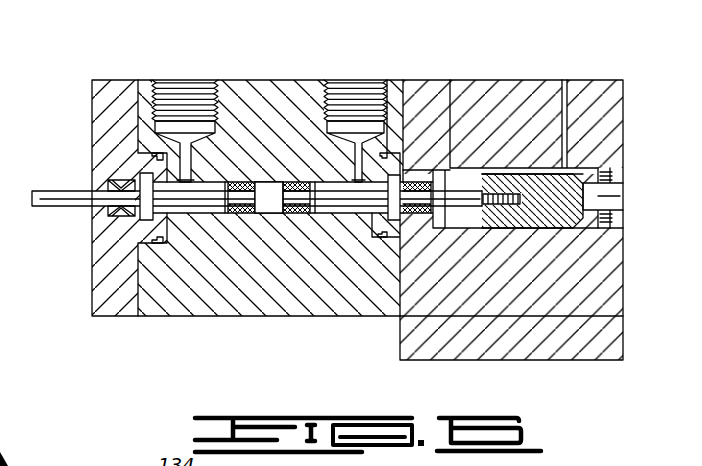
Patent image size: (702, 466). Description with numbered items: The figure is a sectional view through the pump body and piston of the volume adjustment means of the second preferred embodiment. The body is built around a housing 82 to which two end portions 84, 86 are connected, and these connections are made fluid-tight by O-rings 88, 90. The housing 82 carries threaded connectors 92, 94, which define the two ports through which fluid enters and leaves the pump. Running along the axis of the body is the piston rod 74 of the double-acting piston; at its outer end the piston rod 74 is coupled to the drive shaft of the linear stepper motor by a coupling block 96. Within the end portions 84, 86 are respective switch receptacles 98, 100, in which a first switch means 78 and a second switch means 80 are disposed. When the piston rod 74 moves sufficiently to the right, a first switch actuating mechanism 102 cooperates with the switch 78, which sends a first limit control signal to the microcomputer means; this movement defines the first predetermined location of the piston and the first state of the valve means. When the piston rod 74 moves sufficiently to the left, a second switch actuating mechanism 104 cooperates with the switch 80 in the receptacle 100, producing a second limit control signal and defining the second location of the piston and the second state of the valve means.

The piston rod 74 is at (467, 190).
The first switch means 78 is at (400, 177).
The second switch means 80 is at (140, 182).
The housing 82 is at (165, 290).
The end portion 84 is at (424, 343).
The end portion 86 is at (117, 280).
The O-ring 88 is at (157, 153).
The O-ring 90 is at (386, 156).
The threaded connector 92 is at (350, 79).
The threaded connector 94 is at (187, 79).
The coupling block 96 is at (625, 173).
The switch receptacle 98 is at (388, 238).
The switch receptacle 100 is at (148, 214).
The first switch actuating mechanism 102 is at (305, 213).
The second switch actuating mechanism 104 is at (221, 213).